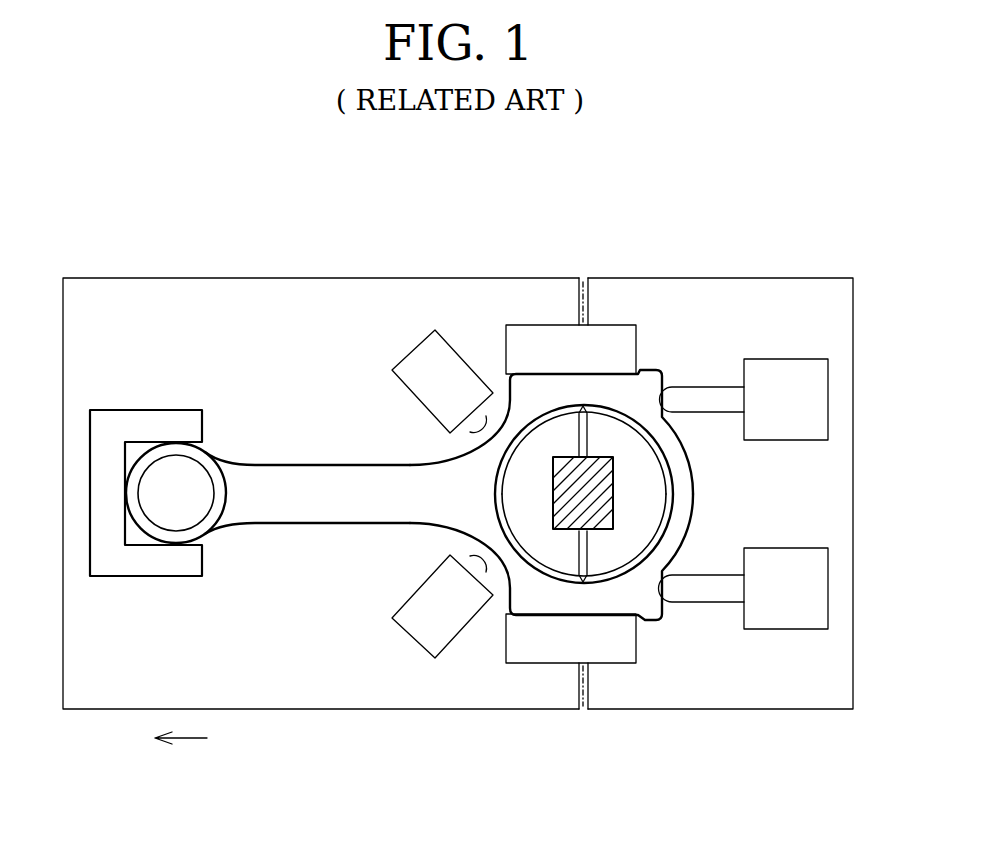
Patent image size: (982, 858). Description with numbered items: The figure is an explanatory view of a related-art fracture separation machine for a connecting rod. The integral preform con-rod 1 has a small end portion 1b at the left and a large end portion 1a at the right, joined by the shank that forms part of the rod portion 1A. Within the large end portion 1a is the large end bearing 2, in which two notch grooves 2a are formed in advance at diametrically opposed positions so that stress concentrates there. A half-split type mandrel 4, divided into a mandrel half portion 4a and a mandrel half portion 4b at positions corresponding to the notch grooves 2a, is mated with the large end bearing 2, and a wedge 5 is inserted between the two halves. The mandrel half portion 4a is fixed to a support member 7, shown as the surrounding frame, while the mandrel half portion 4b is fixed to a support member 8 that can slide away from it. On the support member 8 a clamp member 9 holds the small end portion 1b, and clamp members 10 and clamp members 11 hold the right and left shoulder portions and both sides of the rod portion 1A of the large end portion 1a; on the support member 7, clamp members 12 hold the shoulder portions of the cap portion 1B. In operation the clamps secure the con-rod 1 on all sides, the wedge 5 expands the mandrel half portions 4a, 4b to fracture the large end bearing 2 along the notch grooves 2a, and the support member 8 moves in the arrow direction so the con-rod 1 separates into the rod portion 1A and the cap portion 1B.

The con-rod 1 is at (298, 463).
The rod portion 1A is at (313, 510).
The large end portion 1a is at (523, 390).
The small end portion 1b is at (207, 460).
The cap portion 1B is at (647, 602).
The large end bearing 2 is at (632, 443).
The notch grooves 2a is at (585, 402).
The half-split type mandrel 4 is at (752, 457).
The mandrel half portion 4a is at (635, 476).
The mandrel half portion 4b is at (532, 498).
The wedge 5 is at (563, 508).
The support member 7 is at (773, 278).
The support member 8 is at (228, 278).
The clamp member 9 is at (122, 427).
The clamp members 10 is at (425, 352).
The clamp members 11 is at (567, 340).
The clamp members 12 is at (693, 395).